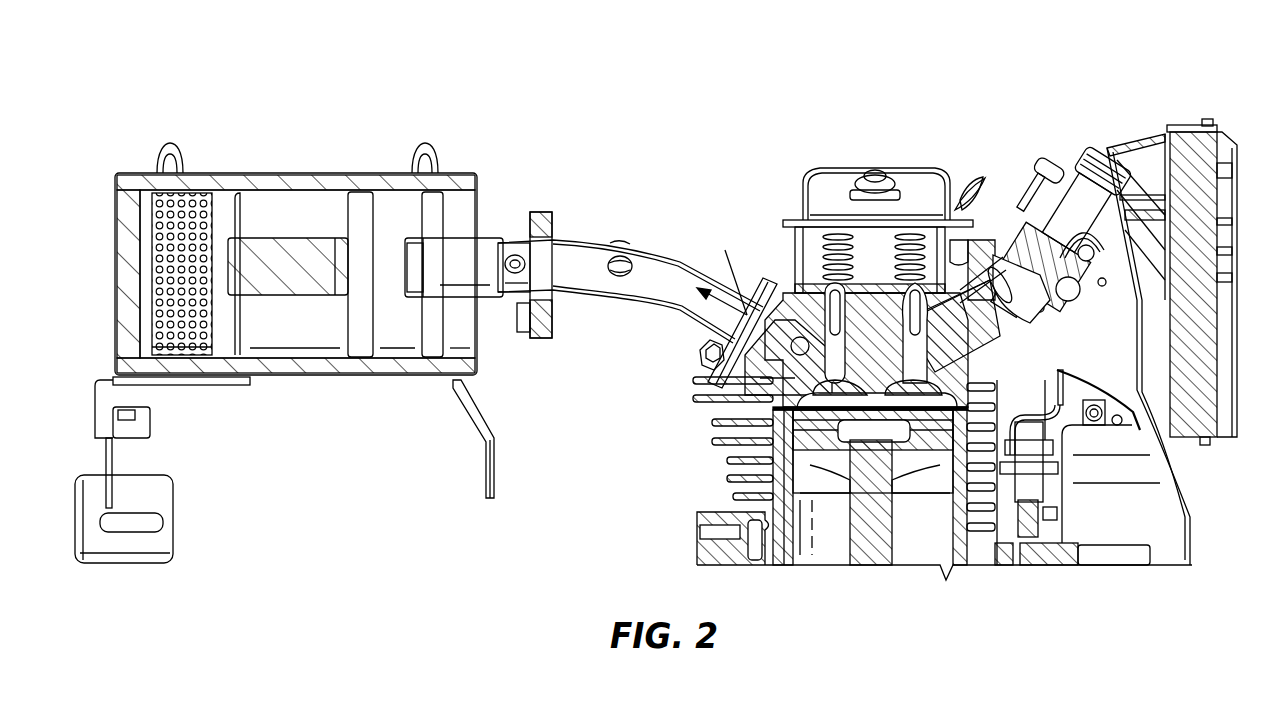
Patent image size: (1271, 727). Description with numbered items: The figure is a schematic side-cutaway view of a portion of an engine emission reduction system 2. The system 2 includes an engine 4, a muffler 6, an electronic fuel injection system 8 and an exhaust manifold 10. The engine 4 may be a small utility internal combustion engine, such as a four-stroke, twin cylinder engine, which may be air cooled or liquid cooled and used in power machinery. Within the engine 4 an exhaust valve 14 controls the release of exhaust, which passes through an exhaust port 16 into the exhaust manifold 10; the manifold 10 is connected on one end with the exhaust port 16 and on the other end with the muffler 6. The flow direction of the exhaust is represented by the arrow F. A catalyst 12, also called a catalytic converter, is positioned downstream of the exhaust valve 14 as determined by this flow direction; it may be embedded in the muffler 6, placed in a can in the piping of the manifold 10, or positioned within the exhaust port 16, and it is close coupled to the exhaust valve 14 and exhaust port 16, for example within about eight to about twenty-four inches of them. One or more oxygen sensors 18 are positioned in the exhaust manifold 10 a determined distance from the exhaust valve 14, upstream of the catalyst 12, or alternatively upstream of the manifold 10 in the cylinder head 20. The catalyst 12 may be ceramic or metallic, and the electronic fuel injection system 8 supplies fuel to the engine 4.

The engine emission reduction system 2 is at (833, 72).
The engine 4 is at (1185, 475).
The muffler 6 is at (333, 173).
The electronic fuel injection (EFI) system 8 is at (1086, 138).
The exhaust manifold 10 is at (668, 252).
The catalyst 12 is at (272, 260).
The exhaust valve 14 is at (812, 368).
The exhaust port 16 is at (745, 338).
The oxygen (O2) sensor 18 is at (512, 236).
The cylinder head 20 is at (885, 168).